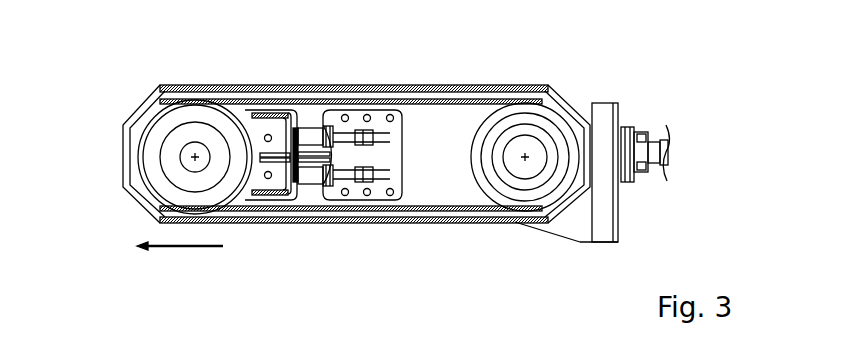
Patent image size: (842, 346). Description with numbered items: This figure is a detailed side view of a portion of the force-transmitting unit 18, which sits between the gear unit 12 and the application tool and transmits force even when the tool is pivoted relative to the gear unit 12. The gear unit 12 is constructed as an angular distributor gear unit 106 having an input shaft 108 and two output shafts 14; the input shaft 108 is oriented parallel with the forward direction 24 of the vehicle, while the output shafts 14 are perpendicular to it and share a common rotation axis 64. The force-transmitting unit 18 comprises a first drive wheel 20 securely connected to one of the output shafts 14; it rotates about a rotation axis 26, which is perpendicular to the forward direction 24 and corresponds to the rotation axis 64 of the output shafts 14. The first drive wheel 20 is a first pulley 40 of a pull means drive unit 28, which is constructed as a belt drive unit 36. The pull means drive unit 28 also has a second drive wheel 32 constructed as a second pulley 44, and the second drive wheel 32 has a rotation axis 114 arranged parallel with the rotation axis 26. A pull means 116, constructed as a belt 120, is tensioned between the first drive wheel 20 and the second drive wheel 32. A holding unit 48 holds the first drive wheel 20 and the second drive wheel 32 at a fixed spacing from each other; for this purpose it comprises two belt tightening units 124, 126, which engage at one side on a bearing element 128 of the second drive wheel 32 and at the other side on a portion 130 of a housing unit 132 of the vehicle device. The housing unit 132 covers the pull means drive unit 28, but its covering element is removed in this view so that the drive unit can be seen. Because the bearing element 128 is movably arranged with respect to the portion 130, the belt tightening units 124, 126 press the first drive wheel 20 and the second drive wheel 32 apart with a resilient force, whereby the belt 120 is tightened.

The gear unit 12 is at (620, 133).
The output shaft 14 is at (533, 152).
The force-transmitting unit 18 is at (126, 90).
The first drive wheel 20 is at (588, 251).
The forward direction 24 is at (177, 248).
The rotation axis 26 is at (525, 118).
The pull means drive unit 28 is at (351, 257).
The second drive wheel 32 is at (160, 204).
The belt drive unit 36 is at (484, 219).
The first pulley 40 is at (550, 193).
The second pulley 44 is at (165, 185).
The holding unit 48 is at (308, 206).
The rotation axis 64 is at (526, 154).
The angular distributor gear unit 106 is at (603, 123).
The input shaft 108 is at (667, 158).
The rotation axis 114 is at (196, 155).
The pull means 116 is at (354, 64).
The belt 120 is at (453, 100).
The belt tightening unit 124 is at (312, 135).
The belt tightening unit 126 is at (312, 178).
The bearing element 128 is at (244, 113).
The portion 130 is at (412, 186).
The housing unit 132 is at (452, 237).